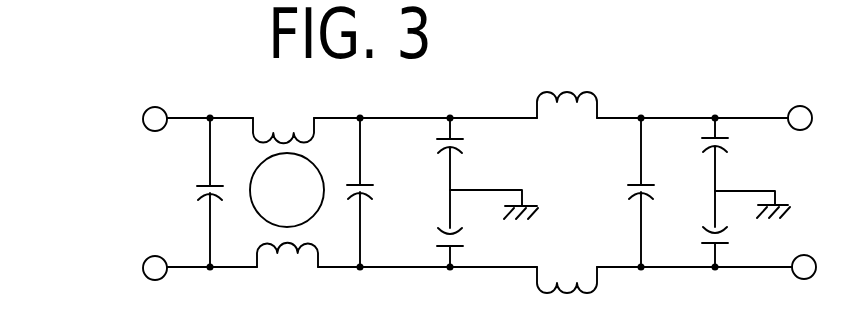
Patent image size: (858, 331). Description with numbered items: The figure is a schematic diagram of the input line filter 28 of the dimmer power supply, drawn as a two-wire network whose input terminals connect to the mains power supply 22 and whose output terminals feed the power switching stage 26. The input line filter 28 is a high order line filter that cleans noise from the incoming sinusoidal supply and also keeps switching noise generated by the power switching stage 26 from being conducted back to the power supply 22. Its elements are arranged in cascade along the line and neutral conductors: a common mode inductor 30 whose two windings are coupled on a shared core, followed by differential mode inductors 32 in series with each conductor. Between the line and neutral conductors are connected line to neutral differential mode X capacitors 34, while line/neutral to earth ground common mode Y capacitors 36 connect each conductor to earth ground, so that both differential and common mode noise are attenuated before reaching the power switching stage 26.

The mains power supply 22 is at (146, 128).
The power switching stage 26 is at (811, 123).
The input line filter 28 is at (780, 71).
The common mode inductor 30 is at (283, 114).
The differential mode inductors 32 is at (575, 92).
The line to neutral differential mode X capacitors 34 is at (216, 183).
The line/neutral to earth ground common mode Y capacitors 36 is at (463, 138).